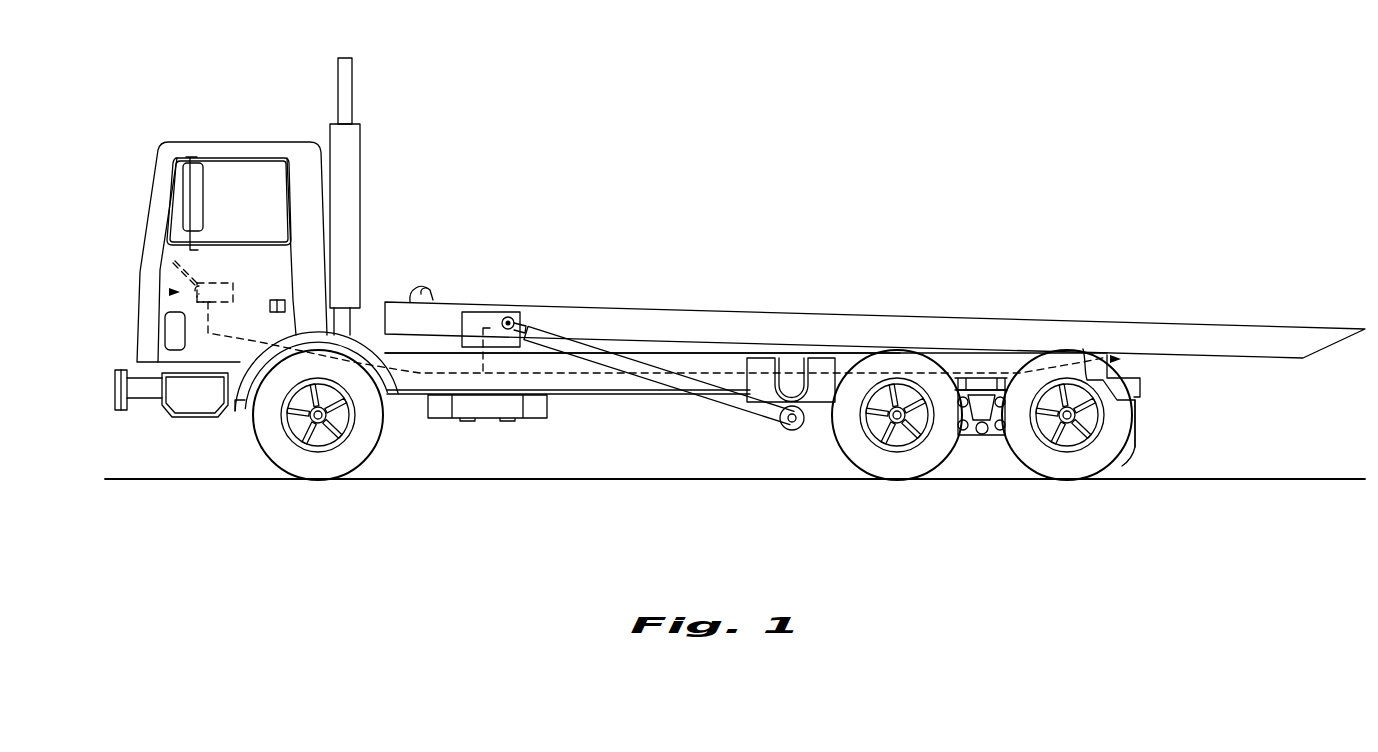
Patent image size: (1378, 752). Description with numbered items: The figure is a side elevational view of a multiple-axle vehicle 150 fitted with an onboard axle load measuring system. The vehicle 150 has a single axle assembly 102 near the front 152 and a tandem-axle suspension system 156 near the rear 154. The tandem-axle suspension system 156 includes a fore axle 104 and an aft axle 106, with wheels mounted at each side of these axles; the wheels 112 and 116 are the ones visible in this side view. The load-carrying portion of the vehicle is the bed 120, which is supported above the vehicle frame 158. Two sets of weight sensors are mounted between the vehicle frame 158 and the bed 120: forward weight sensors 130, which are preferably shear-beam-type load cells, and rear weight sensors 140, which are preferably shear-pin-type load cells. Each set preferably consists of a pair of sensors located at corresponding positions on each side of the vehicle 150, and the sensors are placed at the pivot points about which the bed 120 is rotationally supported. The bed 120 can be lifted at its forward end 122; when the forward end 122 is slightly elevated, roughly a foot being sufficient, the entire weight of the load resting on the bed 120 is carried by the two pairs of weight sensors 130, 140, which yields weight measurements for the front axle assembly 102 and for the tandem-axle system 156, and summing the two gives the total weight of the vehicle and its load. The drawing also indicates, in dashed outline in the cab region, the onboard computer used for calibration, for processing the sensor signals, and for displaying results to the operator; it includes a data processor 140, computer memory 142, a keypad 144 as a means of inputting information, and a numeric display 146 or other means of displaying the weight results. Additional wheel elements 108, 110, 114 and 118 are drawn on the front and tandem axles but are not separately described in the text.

The vehicle 150 is at (998, 205).
The bed 120 is at (672, 323).
The forward end 122 is at (447, 312).
The forward weight sensors 130 is at (510, 318).
The vehicle frame 158 is at (580, 385).
The single axle assembly 102 is at (341, 427).
The fore axle 104 is at (921, 427).
The aft axle 106 is at (1089, 429).
The front tire 108 is at (318, 465).
The wheel 112 is at (878, 463).
The wheel 116 is at (1065, 460).
The front wheel 110 is at (250, 446).
The middle wheel 114 is at (824, 448).
The rear wheel 118 is at (1146, 447).
The rear weight sensors 140 is at (166, 292).
The computer memory 142 is at (196, 284).
The keypad 144 is at (197, 302).
The numeric display 146 is at (173, 264).
The front 152 is at (170, 448).
The rear 154 is at (1141, 388).
The tandem-axle suspension system 156 is at (1147, 467).